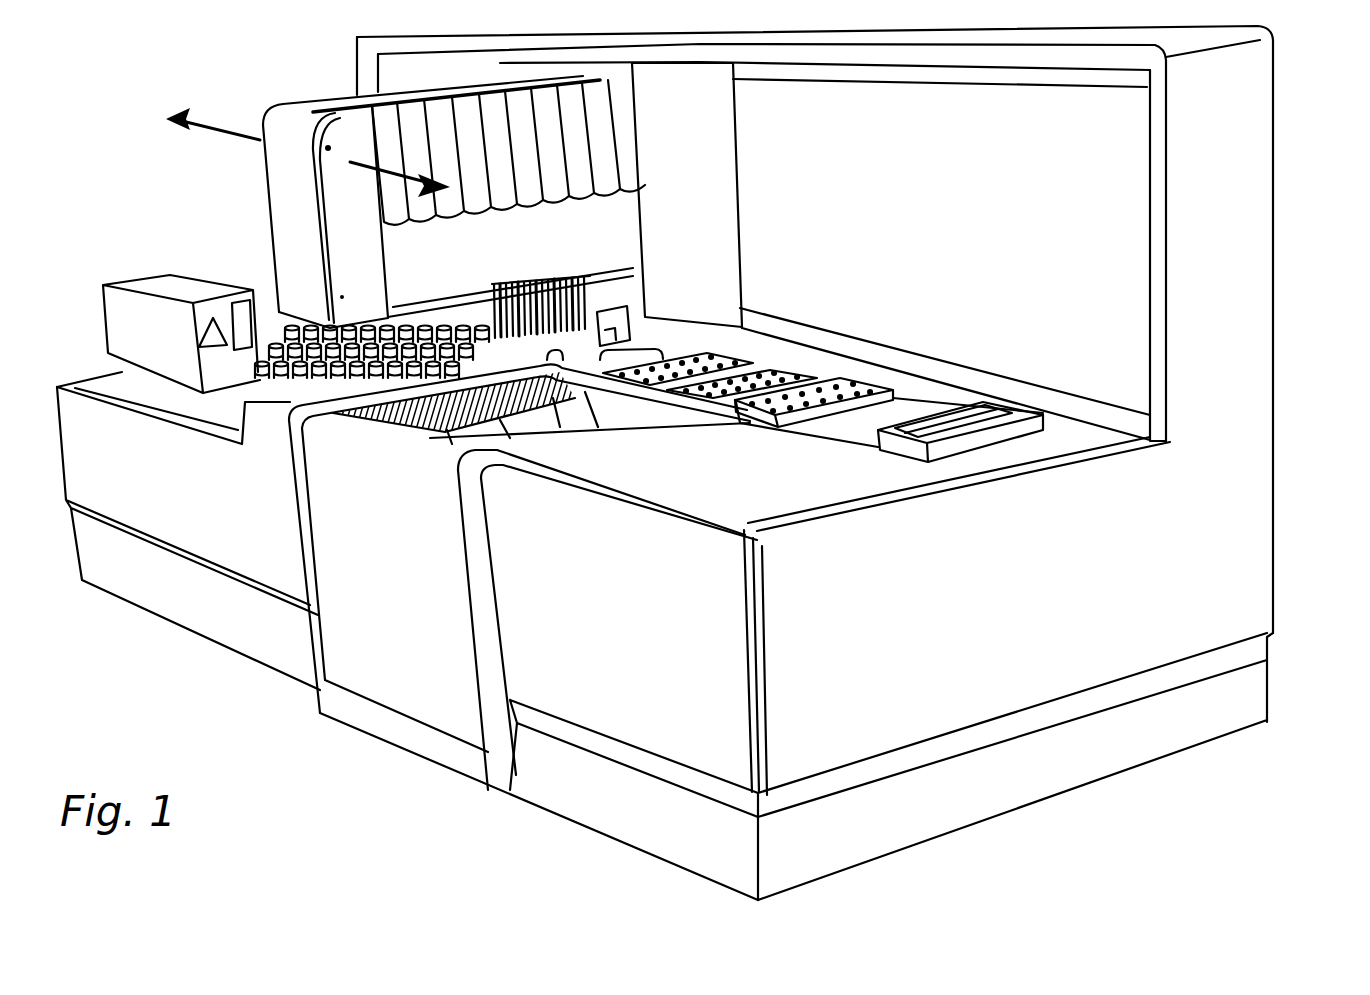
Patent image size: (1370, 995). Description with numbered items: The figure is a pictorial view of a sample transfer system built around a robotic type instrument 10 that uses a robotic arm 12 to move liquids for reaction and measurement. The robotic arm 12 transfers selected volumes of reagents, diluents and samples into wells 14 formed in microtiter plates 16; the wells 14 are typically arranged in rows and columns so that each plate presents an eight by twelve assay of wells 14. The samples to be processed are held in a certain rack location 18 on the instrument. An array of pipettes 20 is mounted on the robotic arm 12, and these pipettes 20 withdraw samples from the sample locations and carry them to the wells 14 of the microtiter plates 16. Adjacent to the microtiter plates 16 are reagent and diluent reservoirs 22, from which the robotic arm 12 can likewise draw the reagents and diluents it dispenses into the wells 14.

The robotic type instrument 10 is at (1276, 438).
The robotic arm 12 is at (296, 101).
The wells 14 is at (757, 368).
The microtiter plates 16 is at (838, 400).
The rack location 18 is at (297, 345).
The array of pipettes 20 is at (565, 308).
The reagent and diluent reservoirs 22 is at (995, 408).